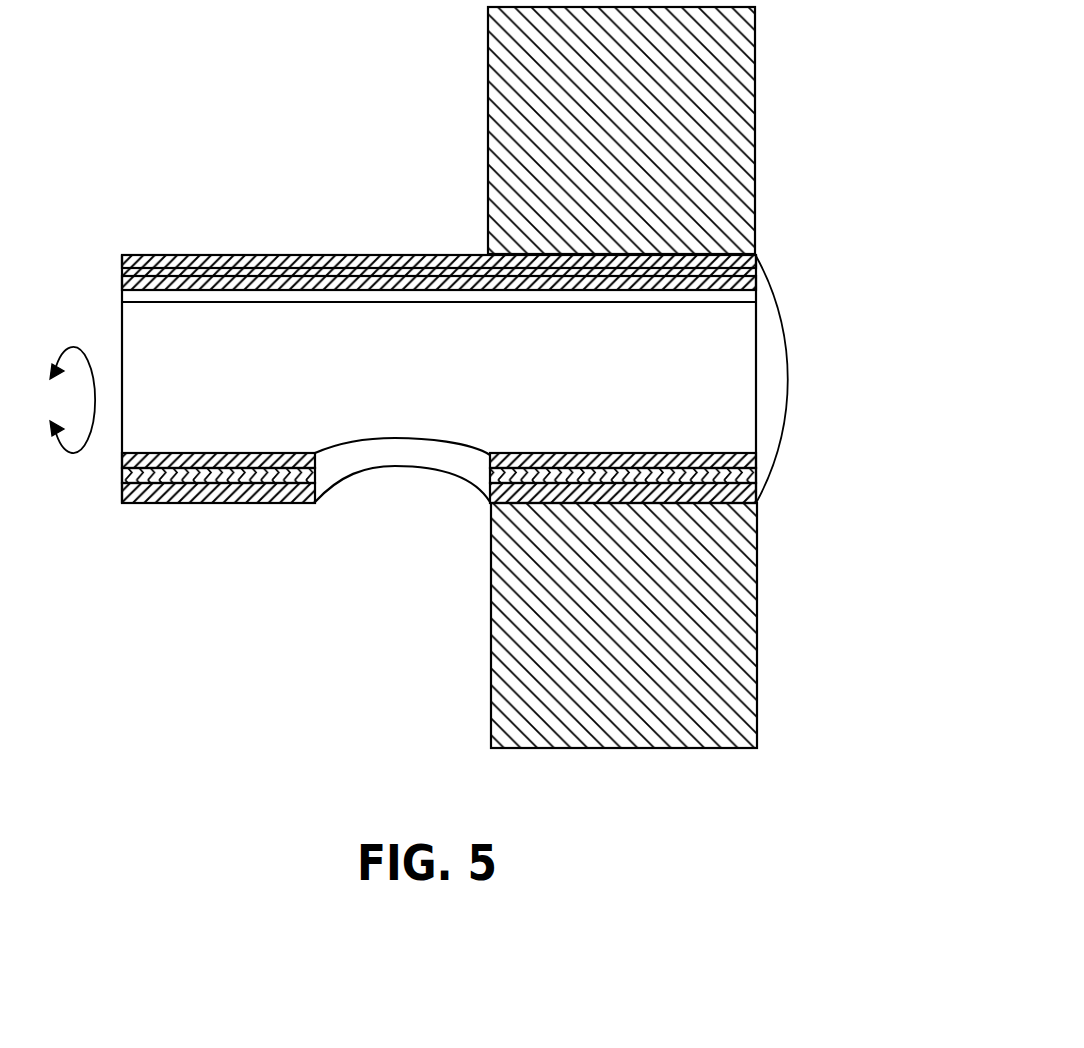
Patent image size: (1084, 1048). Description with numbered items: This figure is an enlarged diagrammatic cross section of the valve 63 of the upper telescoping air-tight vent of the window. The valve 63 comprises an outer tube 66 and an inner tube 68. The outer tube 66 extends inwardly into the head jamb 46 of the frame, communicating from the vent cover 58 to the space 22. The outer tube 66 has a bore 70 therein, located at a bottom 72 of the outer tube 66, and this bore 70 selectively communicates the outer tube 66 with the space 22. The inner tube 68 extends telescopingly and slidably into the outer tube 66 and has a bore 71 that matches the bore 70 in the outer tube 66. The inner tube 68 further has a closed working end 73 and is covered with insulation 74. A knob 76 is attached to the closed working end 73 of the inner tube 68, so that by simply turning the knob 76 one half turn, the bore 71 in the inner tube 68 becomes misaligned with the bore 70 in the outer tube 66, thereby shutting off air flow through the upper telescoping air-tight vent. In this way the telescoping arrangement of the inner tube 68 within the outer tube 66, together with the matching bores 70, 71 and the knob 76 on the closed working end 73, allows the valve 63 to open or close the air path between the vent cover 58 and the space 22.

The space 22 is at (355, 604).
The head jamb 46 is at (512, 91).
The vent cover 58 is at (767, 337).
The valve 63 is at (439, 218).
The outer tube 66 is at (402, 253).
The inner tube 68 is at (632, 387).
The bore 70 is at (381, 466).
The bore 71 is at (410, 449).
The bottom 72 is at (275, 504).
The closed working end 73 is at (189, 517).
The insulation 74 is at (582, 500).
The knob 76 is at (122, 336).